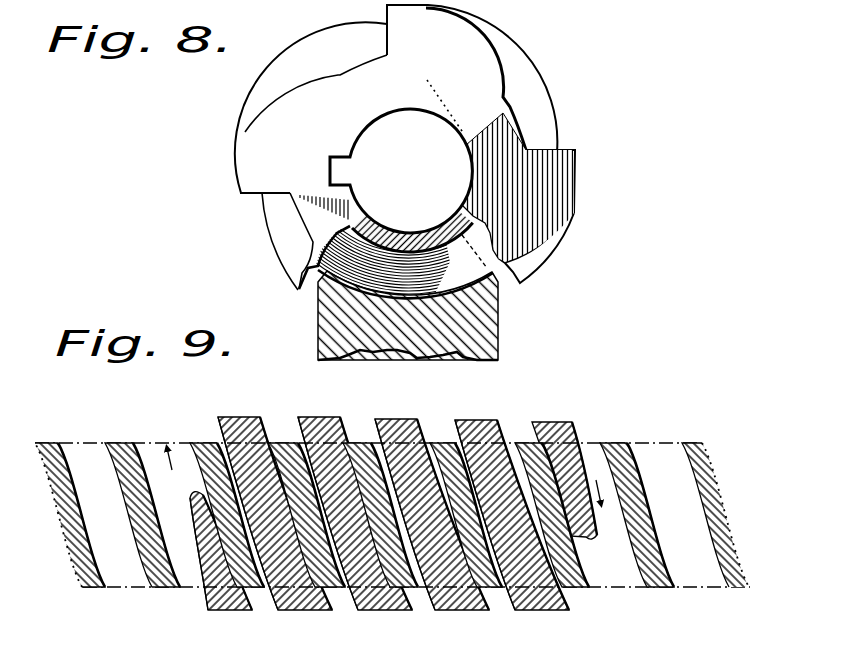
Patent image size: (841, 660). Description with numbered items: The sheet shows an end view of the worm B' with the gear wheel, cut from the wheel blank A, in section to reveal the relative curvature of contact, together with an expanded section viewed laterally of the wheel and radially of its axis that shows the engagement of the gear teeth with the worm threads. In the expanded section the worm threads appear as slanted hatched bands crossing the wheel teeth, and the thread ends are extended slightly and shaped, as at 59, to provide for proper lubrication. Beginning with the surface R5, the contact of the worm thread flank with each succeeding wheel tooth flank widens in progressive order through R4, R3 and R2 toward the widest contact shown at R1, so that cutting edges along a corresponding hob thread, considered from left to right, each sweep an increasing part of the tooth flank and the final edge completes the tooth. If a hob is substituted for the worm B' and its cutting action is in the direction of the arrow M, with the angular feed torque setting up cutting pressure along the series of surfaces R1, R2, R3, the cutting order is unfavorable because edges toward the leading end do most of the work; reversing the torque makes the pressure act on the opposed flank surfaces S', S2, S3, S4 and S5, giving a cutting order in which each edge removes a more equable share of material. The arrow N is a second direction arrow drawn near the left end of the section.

In FIG. 8, the worm B' is at (418, 149).
In FIG. 8, the wheel blank A is at (490, 327).
In FIG. 9, the worm thread flank contact surface R1 is at (587, 457).
In FIG. 9, the worm thread flank contact surface R2 is at (514, 443).
In FIG. 9, the worm thread flank contact surface R3 is at (433, 443).
In FIG. 9, the worm thread flank contact surface R4 is at (350, 442).
In FIG. 9, the worm thread flank contact surface R5 is at (264, 440).
In FIG. 9, the opposed flank surface S' is at (188, 565).
In FIG. 9, the opposed flank surface S2 is at (278, 591).
In FIG. 9, the opposed flank surface S3 is at (357, 595).
In FIG. 9, the opposed flank surface S4 is at (441, 589).
In FIG. 9, the opposed flank surface S5 is at (526, 591).
In FIG. 9, the direction of rotation N is at (175, 471).
In FIG. 9, the arrow indicating direction of cutting action M is at (605, 503).
In FIG. 9, the extended and shaped thread ends 59 is at (594, 540).